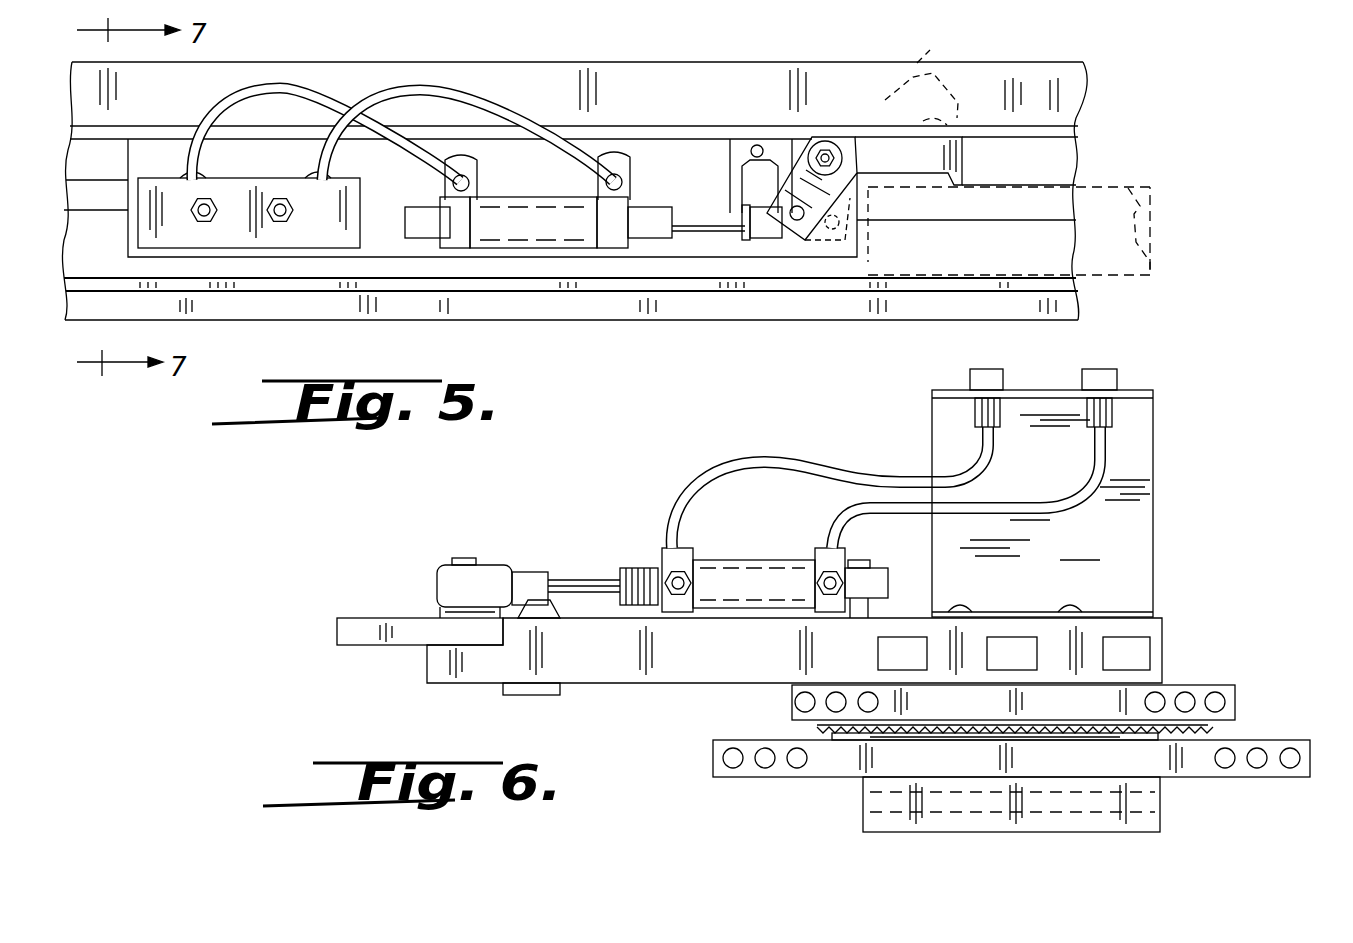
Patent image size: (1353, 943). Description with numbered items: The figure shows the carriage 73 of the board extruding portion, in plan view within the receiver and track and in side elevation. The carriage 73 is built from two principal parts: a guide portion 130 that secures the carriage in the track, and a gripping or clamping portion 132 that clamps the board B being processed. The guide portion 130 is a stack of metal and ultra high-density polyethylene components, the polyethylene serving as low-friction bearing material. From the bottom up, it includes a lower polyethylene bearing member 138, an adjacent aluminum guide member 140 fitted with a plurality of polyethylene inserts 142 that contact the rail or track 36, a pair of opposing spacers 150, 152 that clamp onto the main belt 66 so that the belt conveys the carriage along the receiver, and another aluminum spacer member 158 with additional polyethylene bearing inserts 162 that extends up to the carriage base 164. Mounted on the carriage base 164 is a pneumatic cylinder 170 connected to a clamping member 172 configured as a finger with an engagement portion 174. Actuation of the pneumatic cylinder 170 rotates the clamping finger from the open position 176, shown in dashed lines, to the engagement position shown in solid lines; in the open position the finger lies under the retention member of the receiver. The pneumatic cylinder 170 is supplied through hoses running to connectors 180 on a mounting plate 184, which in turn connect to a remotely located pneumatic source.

In FIG. 5, the open position 176 is at (305, 90).
In FIG. 5, the connectors 180 is at (632, 168).
In FIG. 6, the connectors 180 is at (985, 369).
In FIG. 5, the carriage 73 is at (690, 175).
In FIG. 6, the carriage 73 is at (752, 463).
In FIG. 5, the gripping or clamping portion 132 is at (863, 160).
In FIG. 5, the clamping member 172 is at (993, 128).
In FIG. 5, the engagement portion 174 is at (963, 186).
In FIG. 5, the guide track 36 is at (1042, 210).
In FIG. 5, the board B is at (1137, 212).
In FIG. 5, the pneumatic cylinder 170 is at (540, 228).
In FIG. 6, the pneumatic cylinder 170 is at (757, 572).
In FIG. 6, the mounting plate 184 is at (945, 426).
In FIG. 6, the carriage base 164 is at (648, 650).
In FIG. 6, the main belt 66 is at (817, 728).
In FIG. 6, the aluminum spacer member 158 is at (1190, 685).
In FIG. 6, the polyethylene bearing inserts 162 is at (1215, 702).
In FIG. 6, the polyethylene inserts 142 is at (1257, 758).
In FIG. 6, the guide member 140 is at (1305, 778).
In FIG. 6, the lower polyethylene bearing member 138 is at (1162, 806).
In FIG. 6, the guide portion 130 is at (872, 833).
In FIG. 6, the spacer 150 is at (862, 741).
In FIG. 6, the spacer 152 is at (900, 738).